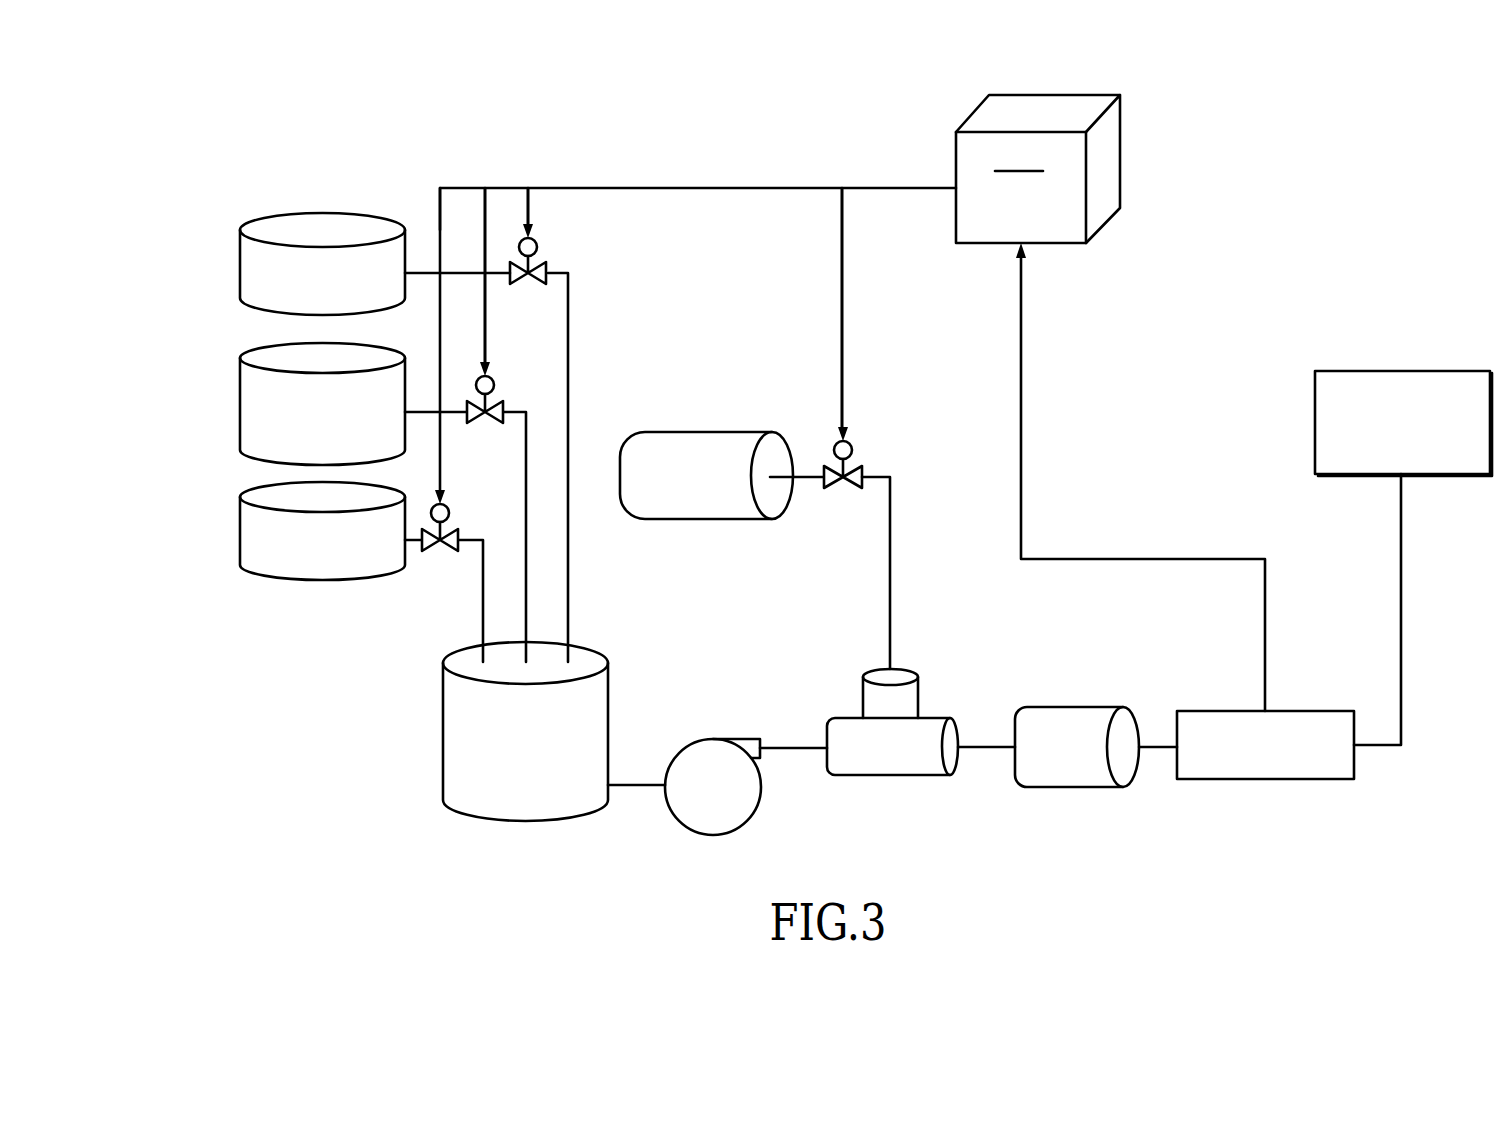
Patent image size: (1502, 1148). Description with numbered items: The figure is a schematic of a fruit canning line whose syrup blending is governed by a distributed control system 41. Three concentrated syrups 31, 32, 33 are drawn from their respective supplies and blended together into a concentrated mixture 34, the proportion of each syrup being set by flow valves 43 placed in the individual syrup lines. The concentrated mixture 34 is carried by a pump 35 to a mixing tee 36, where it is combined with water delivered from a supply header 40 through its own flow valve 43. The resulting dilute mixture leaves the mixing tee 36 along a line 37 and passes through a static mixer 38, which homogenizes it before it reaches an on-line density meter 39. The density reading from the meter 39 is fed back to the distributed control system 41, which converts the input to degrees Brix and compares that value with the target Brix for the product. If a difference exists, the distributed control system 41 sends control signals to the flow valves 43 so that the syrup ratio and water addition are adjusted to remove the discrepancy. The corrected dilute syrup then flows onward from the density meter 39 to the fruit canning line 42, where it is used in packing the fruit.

The concentrated syrup 31 is at (240, 259).
The concentrated syrup 32 is at (240, 400).
The concentrated syrup 33 is at (240, 533).
The concentrated mixture 34 is at (443, 745).
The pump 35 is at (735, 739).
The mixing tee 36 is at (893, 775).
The pipe line 37 is at (983, 749).
The static mixer 38 is at (1058, 707).
The on-line density meter 39 is at (1318, 711).
The supply header 40 is at (676, 519).
The distributed control system 41 is at (1117, 167).
The fruit canning line 42 is at (1315, 416).
The flow valves 43 is at (538, 250).